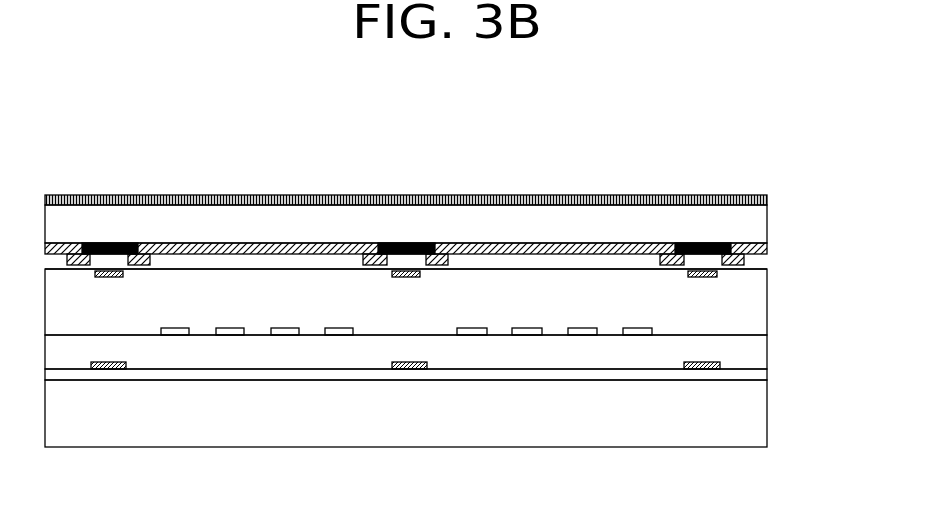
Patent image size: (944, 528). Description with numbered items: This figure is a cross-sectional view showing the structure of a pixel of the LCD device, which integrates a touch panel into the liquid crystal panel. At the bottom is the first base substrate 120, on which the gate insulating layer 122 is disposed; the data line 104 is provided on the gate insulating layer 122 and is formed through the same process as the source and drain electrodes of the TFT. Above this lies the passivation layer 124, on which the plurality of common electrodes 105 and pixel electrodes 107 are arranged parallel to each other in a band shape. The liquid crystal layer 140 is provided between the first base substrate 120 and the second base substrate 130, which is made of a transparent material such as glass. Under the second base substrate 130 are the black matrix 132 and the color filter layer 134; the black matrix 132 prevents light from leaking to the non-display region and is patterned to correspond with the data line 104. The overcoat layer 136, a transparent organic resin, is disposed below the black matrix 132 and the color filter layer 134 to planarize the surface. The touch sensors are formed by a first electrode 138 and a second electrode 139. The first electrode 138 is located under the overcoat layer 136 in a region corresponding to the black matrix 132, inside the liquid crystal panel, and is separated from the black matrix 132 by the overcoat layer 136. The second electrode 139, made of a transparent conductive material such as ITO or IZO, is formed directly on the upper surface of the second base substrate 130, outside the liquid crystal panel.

The data line 104 is at (108, 369).
The common electrode 105 is at (177, 335).
The pixel electrode 107 is at (232, 335).
The first base substrate 120 is at (767, 409).
The gate insulating layer 122 is at (767, 375).
The passivation layer 124 is at (767, 353).
The second base substrate 130 is at (767, 226).
The black matrix 132 is at (108, 243).
The color filter layer 134 is at (767, 249).
The overcoat layer 136 is at (767, 267).
The first electrode 138 is at (693, 278).
The second electrode 139 is at (770, 198).
The liquid crystal layer 140 is at (767, 306).